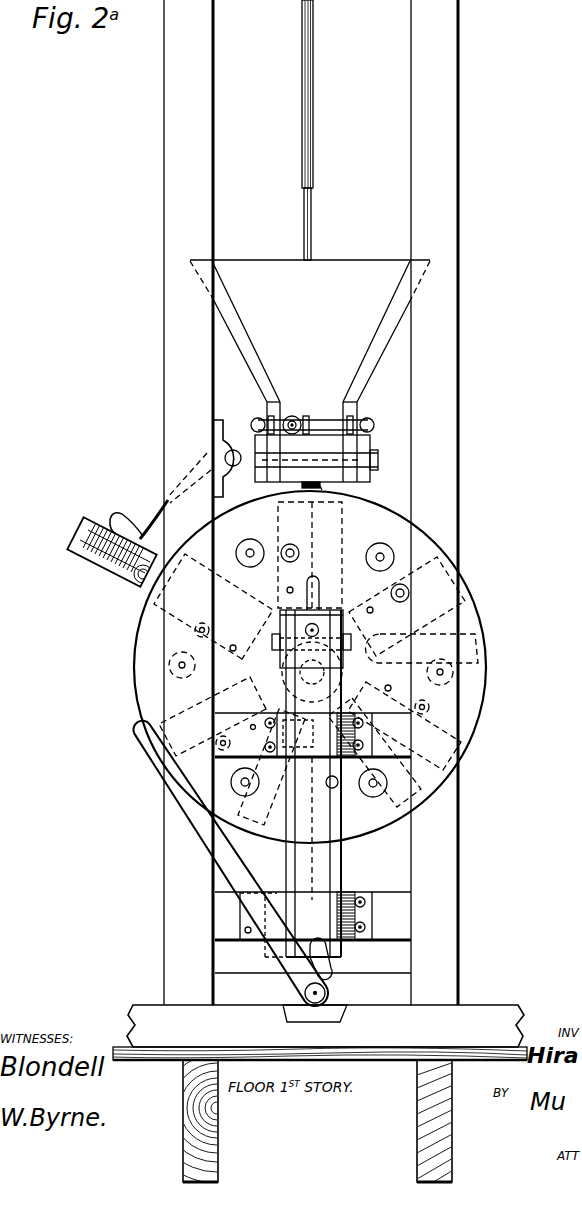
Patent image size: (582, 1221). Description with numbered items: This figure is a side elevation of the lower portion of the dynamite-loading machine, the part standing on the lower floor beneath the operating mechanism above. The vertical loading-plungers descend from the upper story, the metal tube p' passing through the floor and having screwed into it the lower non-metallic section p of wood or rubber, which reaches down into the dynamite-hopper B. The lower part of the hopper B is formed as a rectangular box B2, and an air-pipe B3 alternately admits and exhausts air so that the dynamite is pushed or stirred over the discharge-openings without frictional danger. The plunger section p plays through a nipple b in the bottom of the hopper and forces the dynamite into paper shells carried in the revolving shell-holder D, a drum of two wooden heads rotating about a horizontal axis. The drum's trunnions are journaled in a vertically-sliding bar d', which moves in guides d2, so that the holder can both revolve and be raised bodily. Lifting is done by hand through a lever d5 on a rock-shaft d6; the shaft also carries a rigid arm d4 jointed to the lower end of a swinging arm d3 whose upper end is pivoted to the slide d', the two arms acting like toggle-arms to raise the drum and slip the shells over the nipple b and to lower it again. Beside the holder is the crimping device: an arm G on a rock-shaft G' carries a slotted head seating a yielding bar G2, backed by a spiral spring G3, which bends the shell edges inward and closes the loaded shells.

The metal tube p' is at (319, 94).
The non-metallic plunger section p is at (322, 224).
The dynamite-hopper B is at (308, 317).
The air-pipe B3 is at (362, 417).
The rectangular box B2 is at (320, 450).
The nipple b is at (324, 487).
The rock-shaft G' is at (211, 458).
The arm G is at (160, 496).
The spiral spring G3 is at (110, 560).
The yielding bar G2 is at (138, 578).
The revolving shell-holder D is at (310, 667).
The vertically-sliding bar d' is at (317, 639).
The swinging arm d3 is at (313, 783).
The guide d2 is at (350, 898).
The rigid arm d4 is at (330, 968).
The lever d5 is at (192, 817).
The rock-shaft d6 is at (315, 1001).